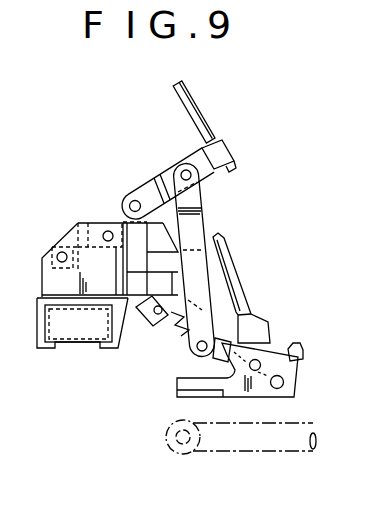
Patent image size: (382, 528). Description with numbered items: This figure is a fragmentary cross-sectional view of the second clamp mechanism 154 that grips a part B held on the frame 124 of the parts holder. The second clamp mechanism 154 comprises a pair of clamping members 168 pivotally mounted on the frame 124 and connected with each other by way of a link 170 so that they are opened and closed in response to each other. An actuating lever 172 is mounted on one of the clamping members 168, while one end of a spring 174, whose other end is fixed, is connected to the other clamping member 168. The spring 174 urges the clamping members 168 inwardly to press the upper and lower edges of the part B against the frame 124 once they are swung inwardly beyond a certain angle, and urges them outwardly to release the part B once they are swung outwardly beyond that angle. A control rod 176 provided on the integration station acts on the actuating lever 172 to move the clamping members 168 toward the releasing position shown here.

The second clamp mechanism 154 is at (82, 192).
The frame 124 is at (82, 343).
The actuating lever 172 is at (200, 99).
The clamping members 168 is at (234, 154).
The link 170 is at (201, 214).
The part B is at (247, 288).
The spring 174 is at (294, 377).
The control rod 176 is at (243, 452).